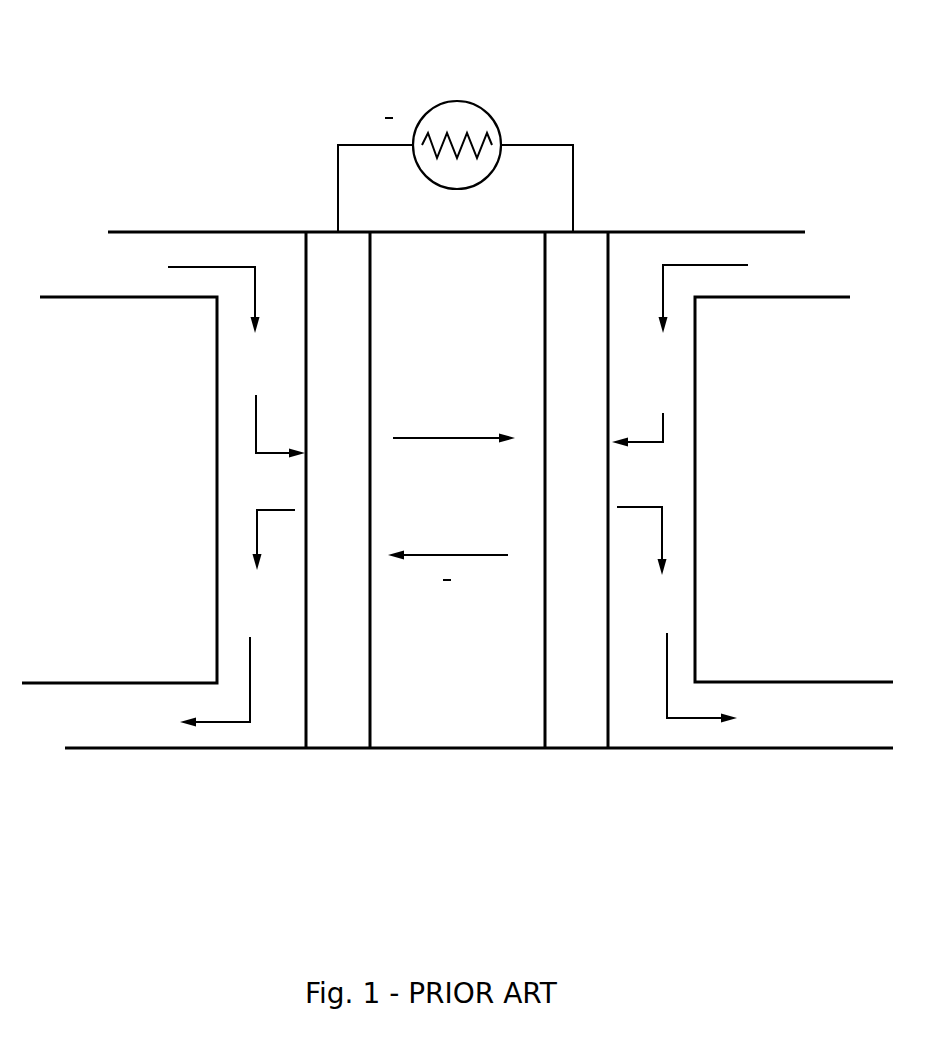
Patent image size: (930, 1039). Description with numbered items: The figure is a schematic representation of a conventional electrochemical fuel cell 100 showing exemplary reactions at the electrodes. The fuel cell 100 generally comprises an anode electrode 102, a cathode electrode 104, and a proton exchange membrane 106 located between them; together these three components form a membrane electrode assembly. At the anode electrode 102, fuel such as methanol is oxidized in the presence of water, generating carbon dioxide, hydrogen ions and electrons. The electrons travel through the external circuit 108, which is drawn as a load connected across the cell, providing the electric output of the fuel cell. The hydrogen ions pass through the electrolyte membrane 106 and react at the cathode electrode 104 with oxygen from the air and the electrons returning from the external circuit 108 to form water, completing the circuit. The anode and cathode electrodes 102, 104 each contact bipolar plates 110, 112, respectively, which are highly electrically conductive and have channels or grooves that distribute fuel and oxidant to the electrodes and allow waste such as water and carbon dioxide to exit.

The fuel cell 100 is at (663, 90).
The anode electrode 102 is at (338, 751).
The cathode electrode 104 is at (592, 751).
The proton exchange membrane 106 is at (458, 751).
The external circuit 108 is at (535, 145).
The bipolar plate 110 is at (277, 232).
The bipolar plate 112 is at (676, 232).